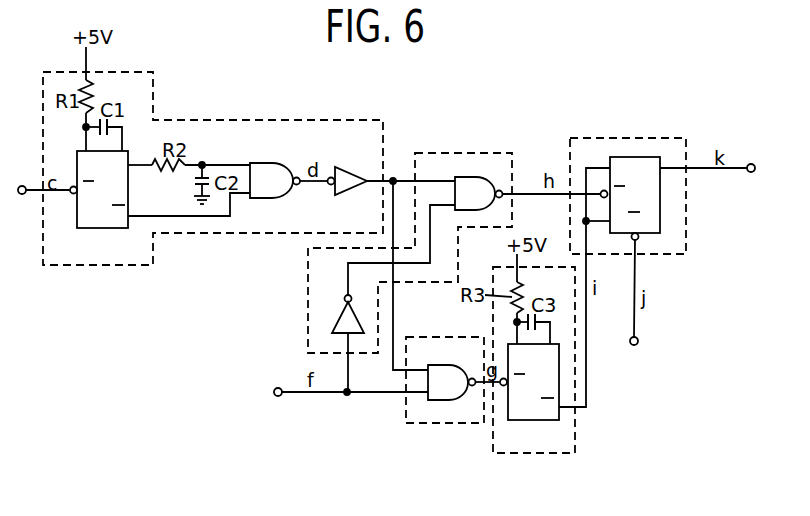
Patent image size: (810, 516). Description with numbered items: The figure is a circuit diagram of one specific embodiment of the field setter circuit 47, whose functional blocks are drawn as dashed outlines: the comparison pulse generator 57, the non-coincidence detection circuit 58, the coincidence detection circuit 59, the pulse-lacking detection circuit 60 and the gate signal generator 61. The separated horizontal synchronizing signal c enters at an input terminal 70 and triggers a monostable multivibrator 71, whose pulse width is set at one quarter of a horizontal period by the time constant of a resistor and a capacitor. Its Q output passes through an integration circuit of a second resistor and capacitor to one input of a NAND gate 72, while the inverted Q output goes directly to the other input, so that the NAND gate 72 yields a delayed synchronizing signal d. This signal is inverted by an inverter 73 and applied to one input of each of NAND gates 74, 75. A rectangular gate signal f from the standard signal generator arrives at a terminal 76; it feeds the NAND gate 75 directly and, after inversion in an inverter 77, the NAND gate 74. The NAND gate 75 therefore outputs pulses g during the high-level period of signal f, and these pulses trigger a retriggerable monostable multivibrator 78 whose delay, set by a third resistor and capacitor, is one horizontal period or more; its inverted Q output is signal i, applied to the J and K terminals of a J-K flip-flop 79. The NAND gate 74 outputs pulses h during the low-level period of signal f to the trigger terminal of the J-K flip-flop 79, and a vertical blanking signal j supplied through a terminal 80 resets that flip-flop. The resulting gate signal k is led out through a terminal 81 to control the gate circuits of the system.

The field setter circuit 47 is at (540, 88).
The comparison pulse generator 57 is at (207, 120).
The non-coincidence detection circuit 58 is at (435, 149).
The coincidence detection circuit 59 is at (430, 425).
The pulse-lacking detection circuit 60 is at (533, 455).
The gate signal generator 61 is at (662, 255).
The input terminal 70 is at (20, 186).
The monostable multivibrator 71 is at (102, 228).
The NAND gate 72 is at (267, 163).
The inverter 73 is at (340, 167).
The NAND gate 74 is at (493, 178).
The NAND gate 75 is at (443, 365).
The terminal 76 is at (275, 388).
The inverter 77 is at (337, 316).
The retriggerable monostable multivibrator 78 is at (532, 420).
The J-K flip-flop 79 is at (630, 157).
The terminal 80 is at (638, 343).
The terminal 81 is at (749, 163).